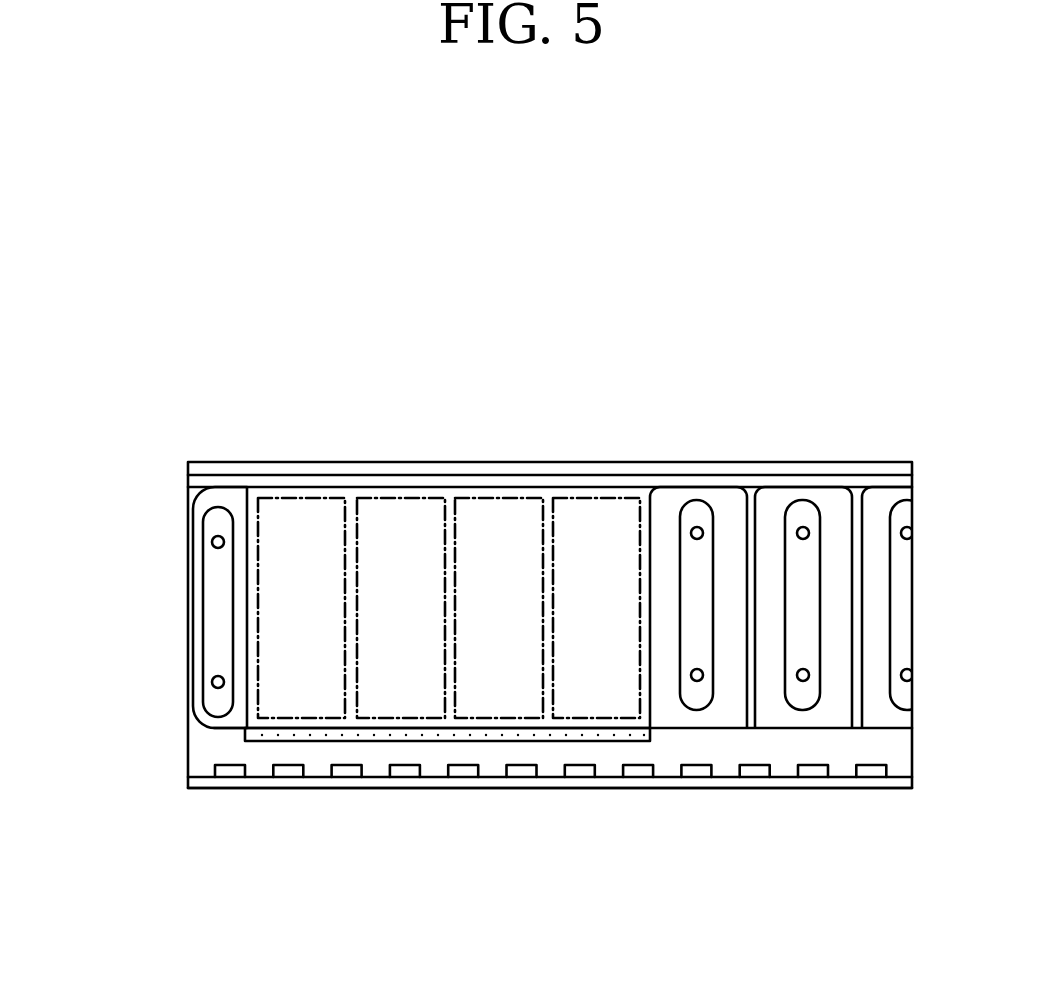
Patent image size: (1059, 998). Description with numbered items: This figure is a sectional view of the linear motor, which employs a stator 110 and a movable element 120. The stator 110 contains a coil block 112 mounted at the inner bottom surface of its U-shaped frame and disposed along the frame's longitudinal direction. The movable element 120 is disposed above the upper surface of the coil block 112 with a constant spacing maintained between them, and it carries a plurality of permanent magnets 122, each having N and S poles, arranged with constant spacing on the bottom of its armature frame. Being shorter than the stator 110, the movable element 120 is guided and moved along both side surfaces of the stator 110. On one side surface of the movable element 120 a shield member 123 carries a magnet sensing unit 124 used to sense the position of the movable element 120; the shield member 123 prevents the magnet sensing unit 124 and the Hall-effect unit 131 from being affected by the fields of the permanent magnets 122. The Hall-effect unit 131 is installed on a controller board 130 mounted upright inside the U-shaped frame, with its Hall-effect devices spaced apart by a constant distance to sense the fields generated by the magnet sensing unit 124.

The stator 110 is at (188, 757).
The coil block 112 is at (198, 632).
The movable element 120 is at (447, 624).
The permanent magnets 122 is at (299, 532).
The shield member 123 is at (492, 718).
The magnet sensing unit 124 is at (431, 728).
The controller board 130 is at (355, 778).
The Hall-effect unit 131 is at (228, 777).